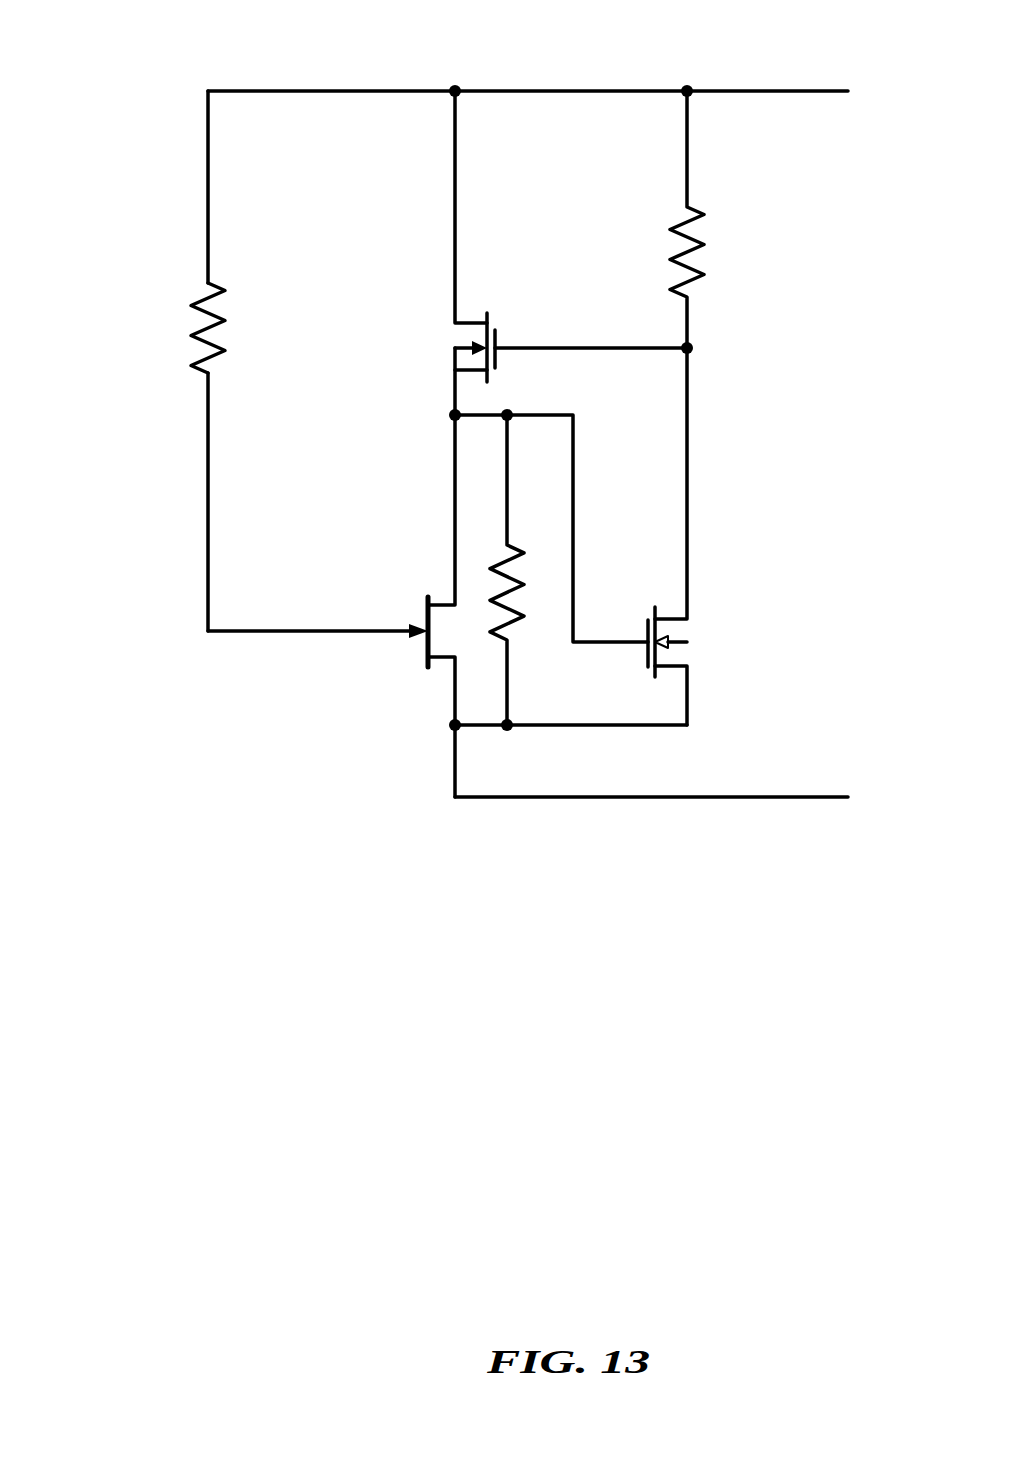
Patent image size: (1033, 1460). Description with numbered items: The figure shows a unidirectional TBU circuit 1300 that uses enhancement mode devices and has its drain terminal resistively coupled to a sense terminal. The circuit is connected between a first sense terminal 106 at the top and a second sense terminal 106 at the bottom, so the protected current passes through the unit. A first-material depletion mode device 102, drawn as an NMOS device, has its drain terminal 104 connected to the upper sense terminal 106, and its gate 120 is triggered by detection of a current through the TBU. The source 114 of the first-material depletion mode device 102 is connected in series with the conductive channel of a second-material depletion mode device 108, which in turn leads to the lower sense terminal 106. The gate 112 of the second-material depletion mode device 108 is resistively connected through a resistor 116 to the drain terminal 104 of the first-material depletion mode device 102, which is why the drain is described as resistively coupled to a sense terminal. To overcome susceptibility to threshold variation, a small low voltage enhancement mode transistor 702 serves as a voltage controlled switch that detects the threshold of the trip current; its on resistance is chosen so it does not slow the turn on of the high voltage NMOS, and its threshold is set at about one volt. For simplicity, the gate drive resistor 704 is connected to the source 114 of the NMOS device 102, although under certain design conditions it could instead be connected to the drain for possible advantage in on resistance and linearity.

The unidirectional TBU circuit 1300 is at (122, 72).
The sense terminal 106 is at (543, 90).
The gate drive resistor 704 is at (702, 268).
The drain terminal 104 is at (462, 326).
The first-material depletion mode device 102 is at (522, 303).
The gate 120 is at (515, 348).
The source 114 is at (457, 370).
The resistive connection 116 is at (220, 318).
The second-material depletion mode device 108 is at (392, 576).
The gate 112 is at (406, 634).
The enhancement mode transistor 702 is at (632, 690).